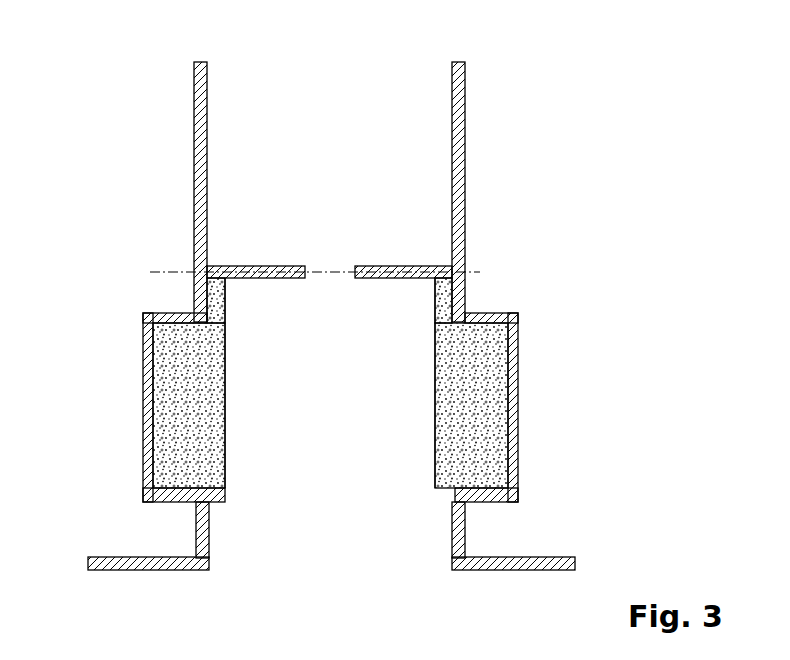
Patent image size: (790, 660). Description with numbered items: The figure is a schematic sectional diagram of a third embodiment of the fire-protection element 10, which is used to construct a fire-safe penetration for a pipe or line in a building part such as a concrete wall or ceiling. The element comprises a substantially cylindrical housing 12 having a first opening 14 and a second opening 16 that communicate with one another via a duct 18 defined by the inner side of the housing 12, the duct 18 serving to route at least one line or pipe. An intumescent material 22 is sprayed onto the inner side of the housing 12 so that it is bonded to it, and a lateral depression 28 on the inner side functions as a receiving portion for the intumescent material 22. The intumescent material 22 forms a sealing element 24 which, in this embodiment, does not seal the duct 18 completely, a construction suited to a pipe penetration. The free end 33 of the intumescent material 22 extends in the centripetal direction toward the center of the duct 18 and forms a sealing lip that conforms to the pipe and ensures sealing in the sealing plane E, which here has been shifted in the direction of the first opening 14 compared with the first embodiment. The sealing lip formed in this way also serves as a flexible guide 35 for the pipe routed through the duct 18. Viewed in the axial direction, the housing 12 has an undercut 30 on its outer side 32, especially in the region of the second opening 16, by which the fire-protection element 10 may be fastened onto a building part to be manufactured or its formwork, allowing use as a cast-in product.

The fire-protection element 10 is at (130, 125).
The housing 12 is at (466, 178).
The first opening 14 is at (273, 70).
The second opening 16 is at (326, 524).
The duct 18 is at (413, 155).
The intumescent material 22 is at (458, 342).
The sealing element 24 is at (227, 322).
The lateral depression 28 is at (495, 448).
The undercut 30 is at (490, 535).
The outer side 32 is at (142, 488).
The free end 33 is at (306, 268).
The flexible guide 35 is at (328, 273).
The sealing plane E is at (172, 270).